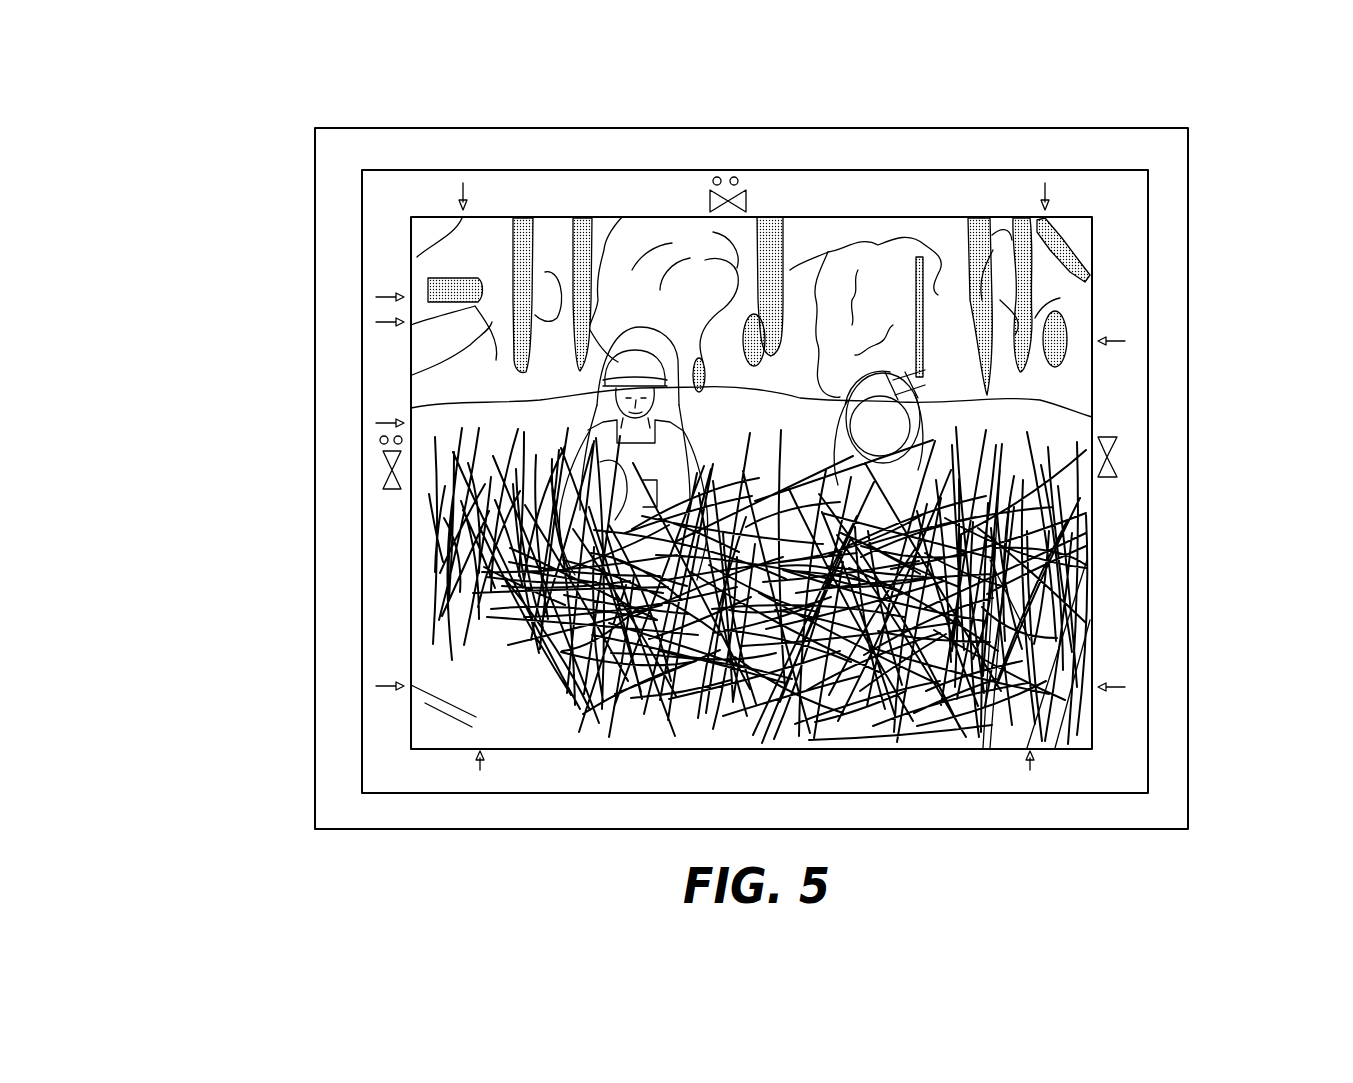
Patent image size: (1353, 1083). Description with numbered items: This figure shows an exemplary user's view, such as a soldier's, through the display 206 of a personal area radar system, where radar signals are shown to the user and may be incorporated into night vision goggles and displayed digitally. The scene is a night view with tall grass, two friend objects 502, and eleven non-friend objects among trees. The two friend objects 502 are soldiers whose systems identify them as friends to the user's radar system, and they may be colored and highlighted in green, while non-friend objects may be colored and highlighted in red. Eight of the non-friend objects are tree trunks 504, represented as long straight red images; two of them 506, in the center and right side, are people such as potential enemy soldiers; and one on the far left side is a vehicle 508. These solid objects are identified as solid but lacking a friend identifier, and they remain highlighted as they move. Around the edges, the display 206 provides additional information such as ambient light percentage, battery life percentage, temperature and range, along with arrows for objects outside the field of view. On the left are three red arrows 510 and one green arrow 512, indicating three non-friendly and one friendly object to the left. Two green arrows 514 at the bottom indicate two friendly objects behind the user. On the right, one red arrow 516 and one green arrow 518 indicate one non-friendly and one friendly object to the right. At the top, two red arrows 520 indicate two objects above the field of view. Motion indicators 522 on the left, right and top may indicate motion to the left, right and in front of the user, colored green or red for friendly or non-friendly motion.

The display 206 is at (790, 39).
The friend objects 502 is at (1200, 568).
The tree trunks 504 is at (698, 358).
The people (non-friend objects) 506 is at (750, 300).
The vehicle 508 is at (481, 277).
The red arrows 510 is at (376, 423).
The green arrow 512 is at (376, 686).
The green arrows 514 is at (1048, 857).
The red arrow 516 is at (1125, 341).
The green arrow 518 is at (1118, 689).
The red arrows 520 is at (460, 186).
The motion indicators 522 is at (1225, 440).